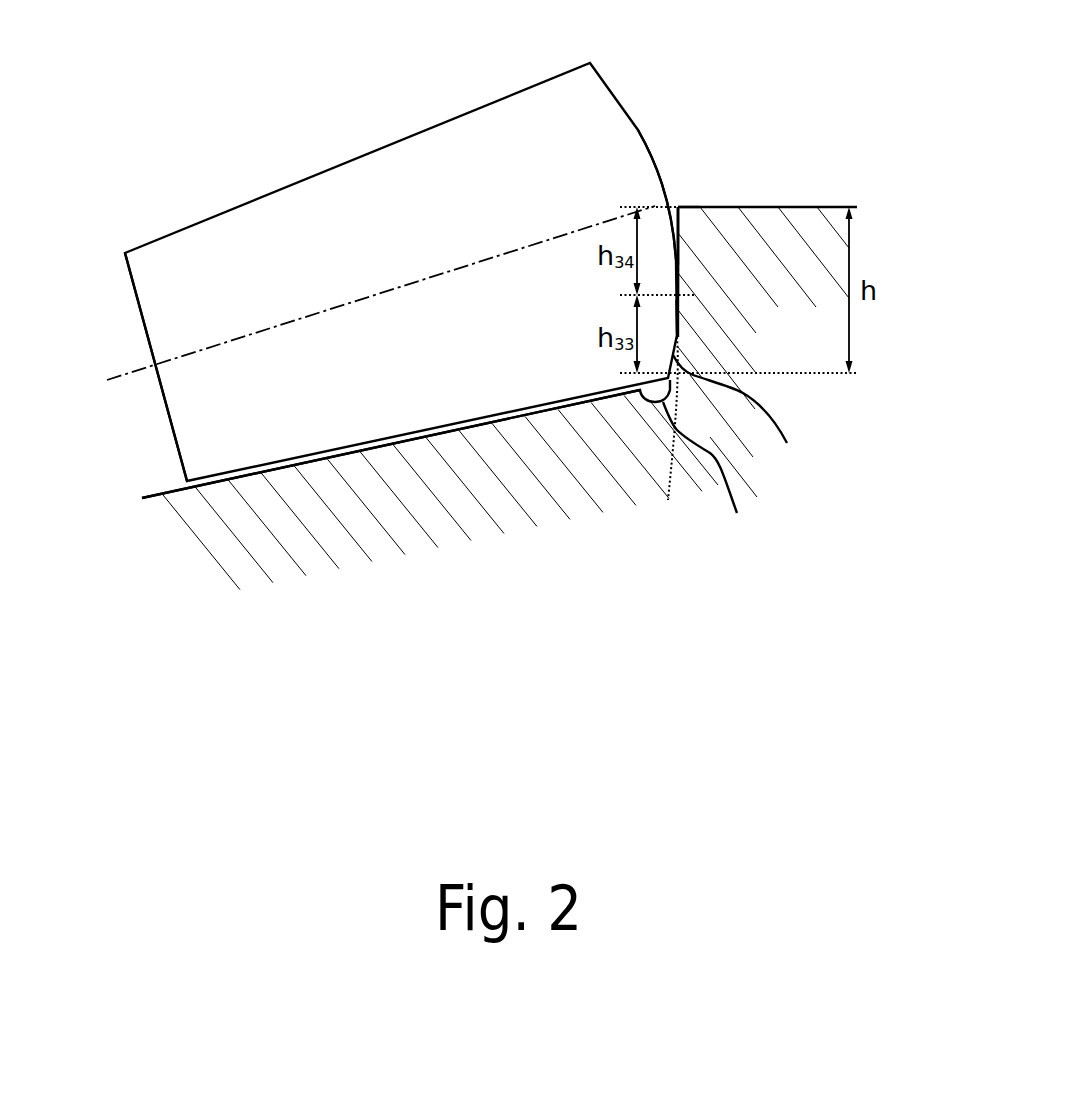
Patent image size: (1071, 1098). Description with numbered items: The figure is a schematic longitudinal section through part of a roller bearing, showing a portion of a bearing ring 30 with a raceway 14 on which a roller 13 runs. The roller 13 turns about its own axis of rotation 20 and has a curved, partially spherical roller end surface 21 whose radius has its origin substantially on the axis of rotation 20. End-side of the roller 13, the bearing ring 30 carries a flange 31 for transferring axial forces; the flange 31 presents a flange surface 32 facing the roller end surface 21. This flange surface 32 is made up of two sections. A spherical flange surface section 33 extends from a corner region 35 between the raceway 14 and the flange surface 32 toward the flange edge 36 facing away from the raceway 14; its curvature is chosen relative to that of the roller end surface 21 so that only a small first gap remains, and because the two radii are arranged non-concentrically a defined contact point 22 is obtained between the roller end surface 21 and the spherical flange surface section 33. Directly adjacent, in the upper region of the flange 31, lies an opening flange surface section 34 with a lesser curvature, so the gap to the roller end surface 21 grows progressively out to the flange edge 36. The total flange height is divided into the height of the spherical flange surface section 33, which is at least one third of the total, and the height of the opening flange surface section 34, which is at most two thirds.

The roller 13 is at (401, 272).
The raceway 14 is at (342, 457).
The axis of rotation of the roller 20 is at (140, 367).
The roller end surface 21 is at (638, 130).
The contact point 22 is at (690, 335).
The bearing ring 30 is at (449, 482).
The flange 31 is at (762, 353).
The flange surface 32 is at (688, 260).
The spherical flange surface section 33 is at (743, 418).
The opening flange surface section 34 is at (678, 237).
The corner region 35 is at (709, 476).
The flange edge 36 is at (678, 207).